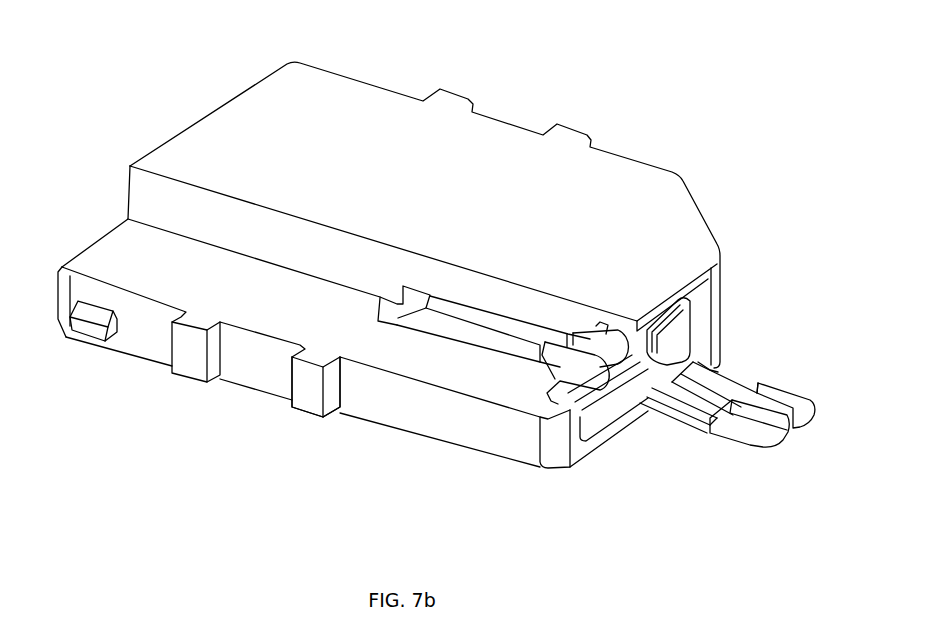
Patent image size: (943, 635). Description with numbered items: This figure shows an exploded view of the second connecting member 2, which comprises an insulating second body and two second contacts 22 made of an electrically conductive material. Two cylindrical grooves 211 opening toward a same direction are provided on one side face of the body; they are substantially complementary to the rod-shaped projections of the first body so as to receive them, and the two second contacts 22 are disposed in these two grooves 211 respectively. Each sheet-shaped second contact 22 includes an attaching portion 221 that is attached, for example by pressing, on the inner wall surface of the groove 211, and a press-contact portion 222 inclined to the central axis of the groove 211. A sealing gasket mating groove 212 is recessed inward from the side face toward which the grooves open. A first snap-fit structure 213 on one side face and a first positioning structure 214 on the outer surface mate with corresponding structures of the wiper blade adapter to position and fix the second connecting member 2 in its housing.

The second connecting member 2 is at (377, 271).
The second contacts 22 is at (738, 404).
The grooves 211 is at (562, 363).
The sealing gasket mating groove 212 is at (570, 390).
The first snap-fit structure 213 is at (80, 338).
The first positioning structure 214 is at (308, 390).
The attaching portion 221 is at (763, 422).
The press-contact portion 222 is at (680, 400).